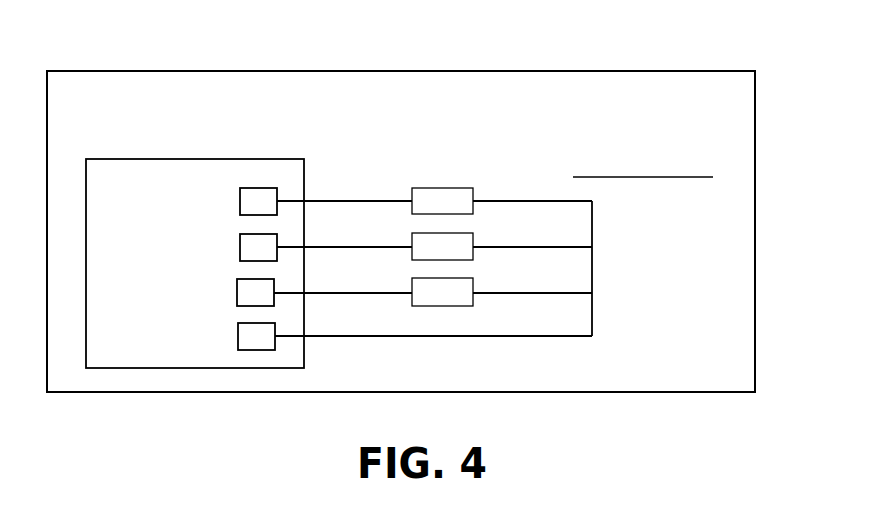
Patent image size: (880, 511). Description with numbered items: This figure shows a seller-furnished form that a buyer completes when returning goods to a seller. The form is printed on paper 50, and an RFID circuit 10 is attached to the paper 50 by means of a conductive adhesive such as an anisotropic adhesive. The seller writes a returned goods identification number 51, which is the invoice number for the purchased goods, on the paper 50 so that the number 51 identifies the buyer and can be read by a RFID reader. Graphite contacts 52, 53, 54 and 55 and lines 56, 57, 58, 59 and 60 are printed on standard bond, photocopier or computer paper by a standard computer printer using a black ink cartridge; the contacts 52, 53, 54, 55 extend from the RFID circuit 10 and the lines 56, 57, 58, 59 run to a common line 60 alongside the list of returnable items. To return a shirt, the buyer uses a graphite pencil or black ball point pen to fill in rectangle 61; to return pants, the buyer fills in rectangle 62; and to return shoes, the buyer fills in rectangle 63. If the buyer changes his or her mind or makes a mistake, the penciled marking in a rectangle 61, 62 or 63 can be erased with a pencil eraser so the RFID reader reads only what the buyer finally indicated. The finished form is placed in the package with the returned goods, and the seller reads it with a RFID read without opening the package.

The paper 50 is at (595, 71).
The RFID circuit 10 is at (158, 159).
The returned goods identification number 51 is at (430, 125).
The graphite contact 52 is at (240, 210).
The graphite contact 53 is at (240, 255).
The graphite contact 54 is at (237, 300).
The graphite contact 55 is at (238, 339).
The line 56 is at (379, 201).
The line 57 is at (379, 247).
The line 58 is at (379, 293).
The line 59 is at (381, 336).
The line 60 is at (592, 317).
The rectangle 61 is at (473, 188).
The rectangle 62 is at (473, 233).
The rectangle 63 is at (473, 278).